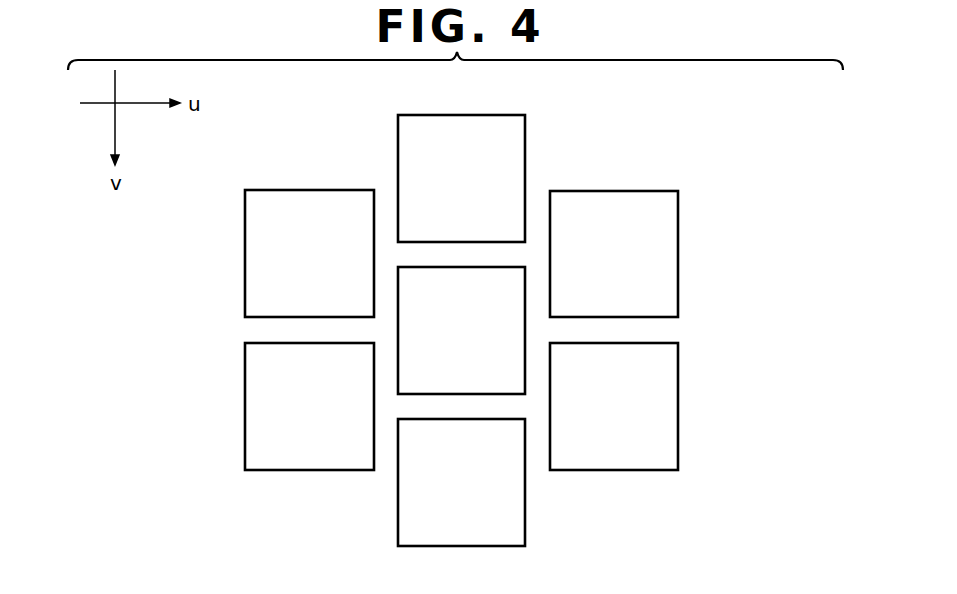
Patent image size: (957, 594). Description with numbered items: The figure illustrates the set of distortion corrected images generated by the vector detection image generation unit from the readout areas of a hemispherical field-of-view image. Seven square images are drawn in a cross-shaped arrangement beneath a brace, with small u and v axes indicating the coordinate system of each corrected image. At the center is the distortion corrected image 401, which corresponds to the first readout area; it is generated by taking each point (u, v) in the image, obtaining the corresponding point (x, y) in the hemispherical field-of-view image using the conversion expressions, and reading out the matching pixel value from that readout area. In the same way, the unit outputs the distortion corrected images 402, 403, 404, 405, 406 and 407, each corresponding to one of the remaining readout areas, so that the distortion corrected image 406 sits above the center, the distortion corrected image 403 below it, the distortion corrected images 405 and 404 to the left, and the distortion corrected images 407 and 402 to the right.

The distortion corrected image 401 is at (528, 268).
The distortion corrected image 402 is at (650, 472).
The distortion corrected image 403 is at (413, 548).
The distortion corrected image 404 is at (260, 472).
The distortion corrected image 405 is at (258, 189).
The distortion corrected image 406 is at (413, 114).
The distortion corrected image 407 is at (652, 190).